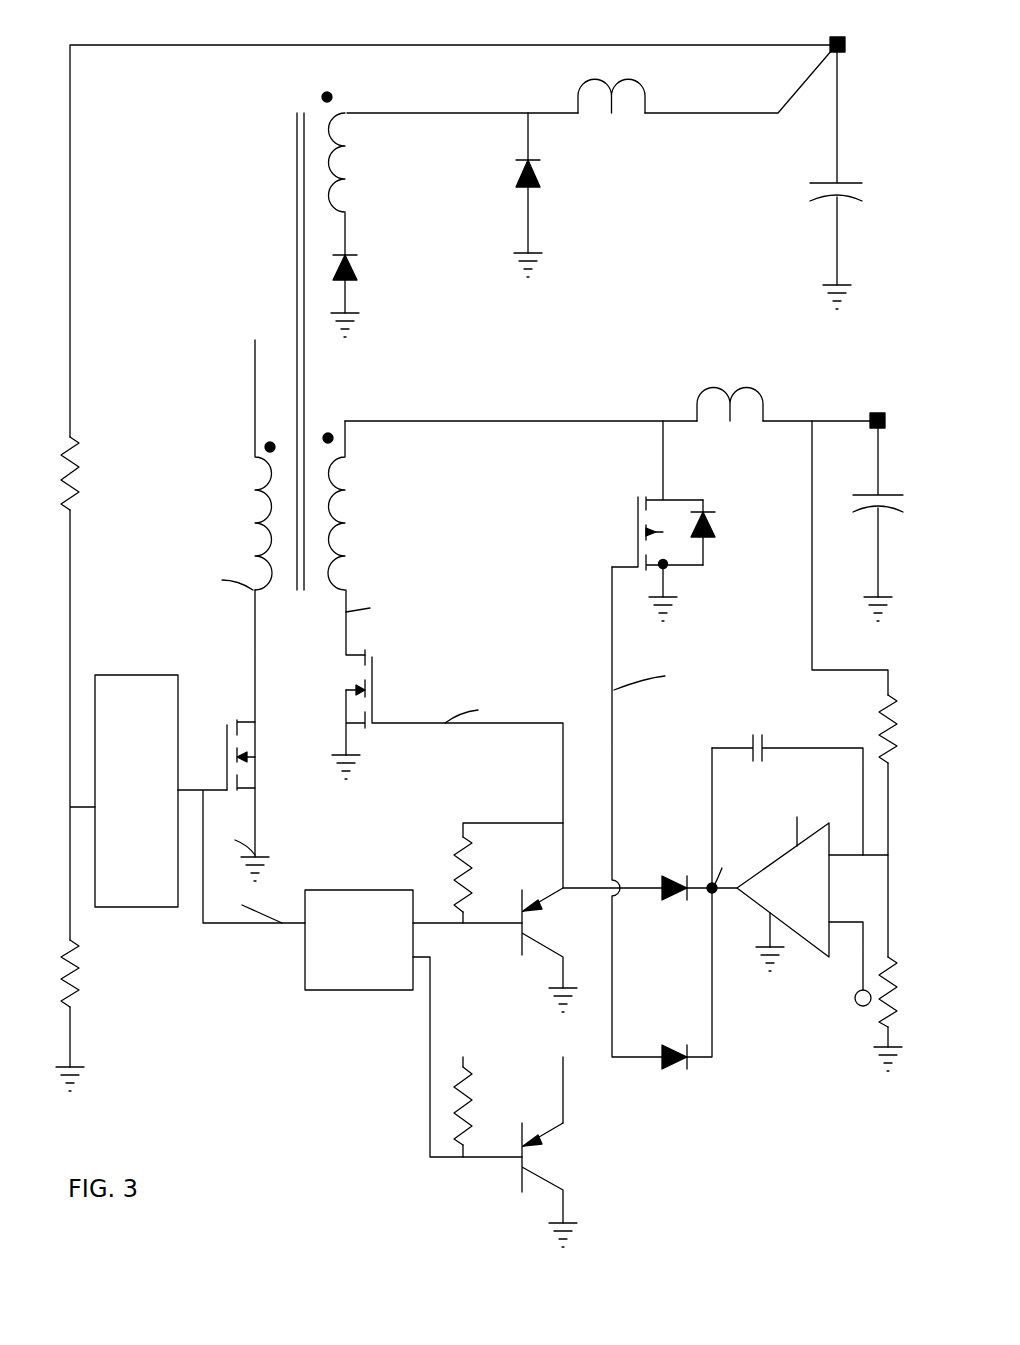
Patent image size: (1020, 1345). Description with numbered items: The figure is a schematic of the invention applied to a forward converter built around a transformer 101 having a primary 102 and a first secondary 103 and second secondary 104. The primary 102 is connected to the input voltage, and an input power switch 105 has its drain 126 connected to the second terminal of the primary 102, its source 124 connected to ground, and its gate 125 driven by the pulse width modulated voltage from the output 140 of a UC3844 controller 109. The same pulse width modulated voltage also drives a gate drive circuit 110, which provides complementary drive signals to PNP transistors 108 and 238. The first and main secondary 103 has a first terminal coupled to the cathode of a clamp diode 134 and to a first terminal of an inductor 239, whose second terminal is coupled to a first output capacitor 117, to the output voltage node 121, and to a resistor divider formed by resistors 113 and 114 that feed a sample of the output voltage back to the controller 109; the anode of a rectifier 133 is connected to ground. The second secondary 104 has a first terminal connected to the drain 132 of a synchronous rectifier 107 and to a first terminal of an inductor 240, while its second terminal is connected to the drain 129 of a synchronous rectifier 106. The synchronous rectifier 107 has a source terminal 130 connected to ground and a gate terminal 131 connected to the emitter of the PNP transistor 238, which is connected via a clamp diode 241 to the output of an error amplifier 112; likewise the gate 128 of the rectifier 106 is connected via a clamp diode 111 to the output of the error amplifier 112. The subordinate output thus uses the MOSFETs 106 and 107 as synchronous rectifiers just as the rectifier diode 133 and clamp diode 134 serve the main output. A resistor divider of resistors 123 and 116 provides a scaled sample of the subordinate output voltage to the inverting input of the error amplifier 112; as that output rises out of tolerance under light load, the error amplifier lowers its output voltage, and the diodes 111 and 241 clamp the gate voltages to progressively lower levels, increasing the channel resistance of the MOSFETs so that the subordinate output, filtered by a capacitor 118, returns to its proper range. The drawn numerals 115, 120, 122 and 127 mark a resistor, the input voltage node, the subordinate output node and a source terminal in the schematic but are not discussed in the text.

The transformer 101 is at (295, 150).
The primary 102 is at (265, 517).
The first secondary 103 is at (332, 175).
The second secondary 104 is at (332, 525).
The input power switch 105 is at (252, 709).
The synchronous rectifier 106 is at (432, 687).
The synchronous rectifier 107 is at (673, 537).
The PNP transistor 108 is at (542, 927).
The controller 109 is at (126, 763).
The gate drive circuit 110 is at (387, 976).
The clamp diode 111 is at (673, 900).
The error amplifier 112 is at (803, 897).
The resistor 113 is at (77, 477).
The resistor 114 is at (77, 985).
The resistor 115 is at (470, 862).
The resistor 116 is at (873, 1020).
The first output capacitor 117 is at (810, 200).
The capacitor 118 is at (870, 512).
The input voltage node 120 is at (255, 388).
The output voltage node 121 is at (828, 47).
The second output node V2 122 is at (870, 413).
The resistor 123 is at (882, 700).
The source 124 is at (255, 790).
The gate 125 is at (208, 790).
The drain 126 is at (255, 722).
The source terminal of MOSFET 106 127 is at (365, 738).
The gate 128 is at (372, 718).
The drain 129 is at (360, 637).
The source terminal 130 is at (658, 570).
The gate terminal 131 is at (622, 565).
The drain 132 is at (700, 483).
The rectifier 133 is at (360, 268).
The clamp diode 134 is at (537, 177).
The output 140 is at (173, 791).
The PNP transistor 238 is at (542, 1157).
The inductor 239 is at (613, 115).
The inductor 240 is at (718, 388).
The clamp diode 241 is at (673, 1050).